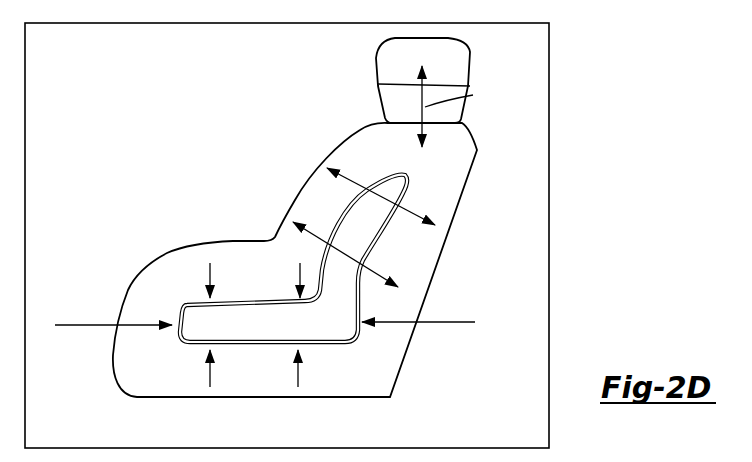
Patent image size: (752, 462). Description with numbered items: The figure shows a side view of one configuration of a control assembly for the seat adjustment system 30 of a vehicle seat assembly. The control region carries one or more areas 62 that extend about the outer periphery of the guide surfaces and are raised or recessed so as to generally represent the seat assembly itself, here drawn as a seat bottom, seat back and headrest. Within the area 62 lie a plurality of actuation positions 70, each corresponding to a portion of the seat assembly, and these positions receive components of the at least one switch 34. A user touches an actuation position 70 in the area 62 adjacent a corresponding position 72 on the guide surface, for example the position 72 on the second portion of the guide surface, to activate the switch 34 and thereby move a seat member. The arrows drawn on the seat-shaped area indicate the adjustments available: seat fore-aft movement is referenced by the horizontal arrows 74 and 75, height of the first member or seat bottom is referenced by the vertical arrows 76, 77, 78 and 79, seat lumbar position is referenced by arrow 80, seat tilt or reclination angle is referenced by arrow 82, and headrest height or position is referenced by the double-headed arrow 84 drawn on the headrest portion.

The seat adjustment system 30 is at (281, 234).
The switch 34 is at (528, 221).
The area 62 is at (440, 184).
The actuation position 70 is at (458, 63).
The position on guide surface 72 is at (385, 86).
The seat fore-aft movement arrow 74 is at (78, 323).
The seat fore-aft movement arrow 75 is at (443, 322).
The seat bottom height arrow 76 is at (207, 377).
The seat bottom height arrow 77 is at (210, 263).
The seat bottom height arrow 78 is at (296, 374).
The seat bottom height arrow 79 is at (298, 272).
The seat lumbar position arrow 80 is at (382, 263).
The seat tilt or reclination angle arrow 82 is at (412, 218).
The headrest height or position arrow 84 is at (473, 95).